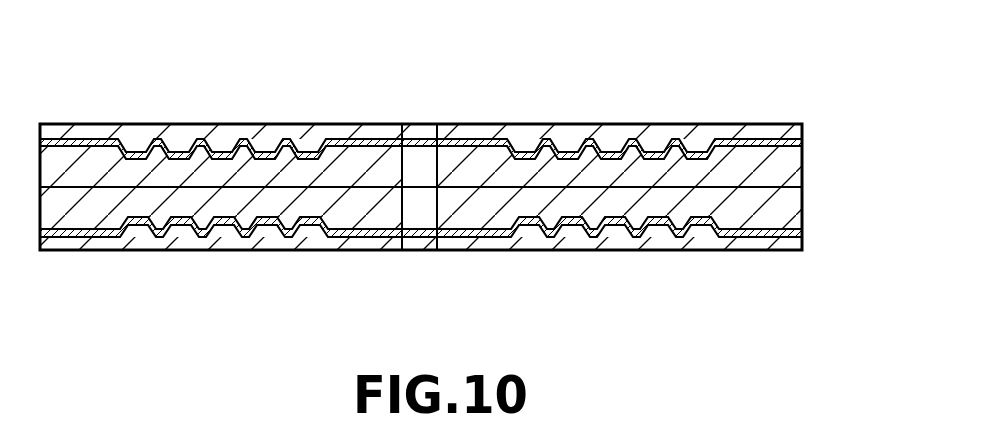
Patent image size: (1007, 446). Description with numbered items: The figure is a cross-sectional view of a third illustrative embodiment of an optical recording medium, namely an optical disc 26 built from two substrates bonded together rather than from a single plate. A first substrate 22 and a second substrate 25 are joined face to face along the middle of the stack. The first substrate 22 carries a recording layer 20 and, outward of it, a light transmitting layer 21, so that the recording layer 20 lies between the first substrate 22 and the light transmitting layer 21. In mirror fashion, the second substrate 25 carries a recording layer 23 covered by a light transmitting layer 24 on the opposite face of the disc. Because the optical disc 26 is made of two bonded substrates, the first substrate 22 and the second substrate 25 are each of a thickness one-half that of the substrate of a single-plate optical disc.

The recording layer 20 is at (787, 139).
The light transmitting layer 21 is at (788, 130).
The first substrate 22 is at (788, 168).
The recording layer 23 is at (788, 230).
The light transmitting layer 24 is at (790, 243).
The second substrate 25 is at (788, 197).
The optical disc 26 is at (699, 98).